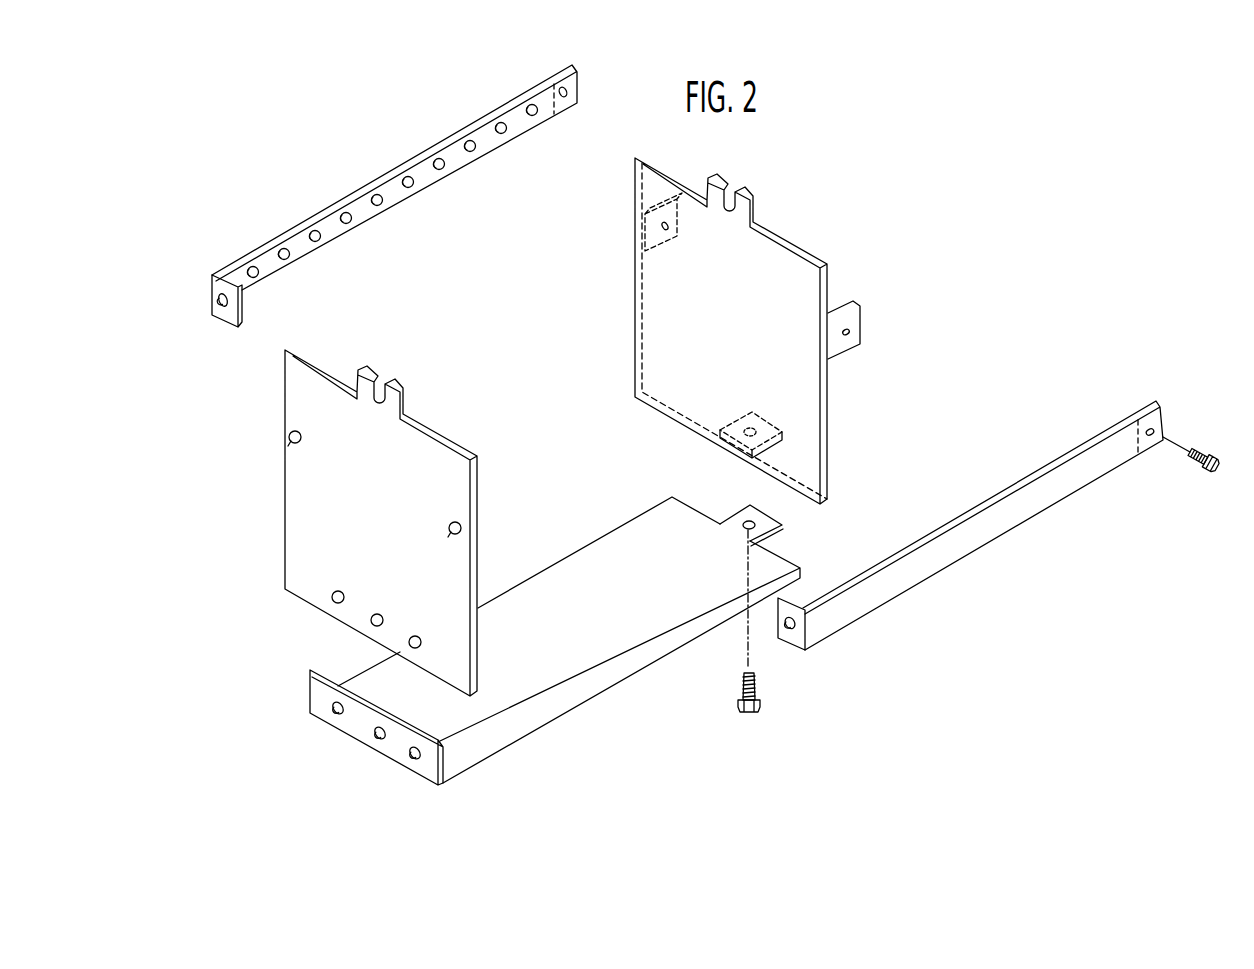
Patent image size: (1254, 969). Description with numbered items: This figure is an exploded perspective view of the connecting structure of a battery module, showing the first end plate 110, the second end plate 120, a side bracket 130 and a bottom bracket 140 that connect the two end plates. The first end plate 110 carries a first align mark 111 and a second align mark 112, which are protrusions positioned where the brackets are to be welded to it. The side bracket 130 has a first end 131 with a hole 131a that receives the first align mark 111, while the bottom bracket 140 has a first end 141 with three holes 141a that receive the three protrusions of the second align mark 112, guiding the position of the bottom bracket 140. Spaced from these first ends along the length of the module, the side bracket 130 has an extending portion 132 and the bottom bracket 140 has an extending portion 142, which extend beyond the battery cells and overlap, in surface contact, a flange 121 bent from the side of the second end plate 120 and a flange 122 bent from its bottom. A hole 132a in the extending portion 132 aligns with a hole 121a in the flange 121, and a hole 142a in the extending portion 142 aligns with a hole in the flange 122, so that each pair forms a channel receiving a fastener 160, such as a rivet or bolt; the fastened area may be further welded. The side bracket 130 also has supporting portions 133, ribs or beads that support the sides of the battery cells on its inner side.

The first end plate 110 is at (377, 501).
The first align mark 111 is at (294, 431).
The second align mark 112 is at (414, 636).
The second end plate 120 is at (748, 331).
The flange 121 is at (748, 301).
The hole 121a is at (855, 332).
The flange 122 is at (776, 426).
The side bracket 130 is at (479, 112).
The first end 131 is at (553, 495).
The hole 131a is at (800, 628).
The extending portion 132 is at (878, 296).
The hole 132a is at (1160, 430).
The supporting portion 133 is at (472, 154).
The bottom bracket 140 is at (589, 657).
The first end 141 is at (376, 744).
The hole 141a is at (412, 757).
The extending portion 142 is at (794, 527).
The hole 142a is at (762, 517).
The fastener 160 is at (749, 714).